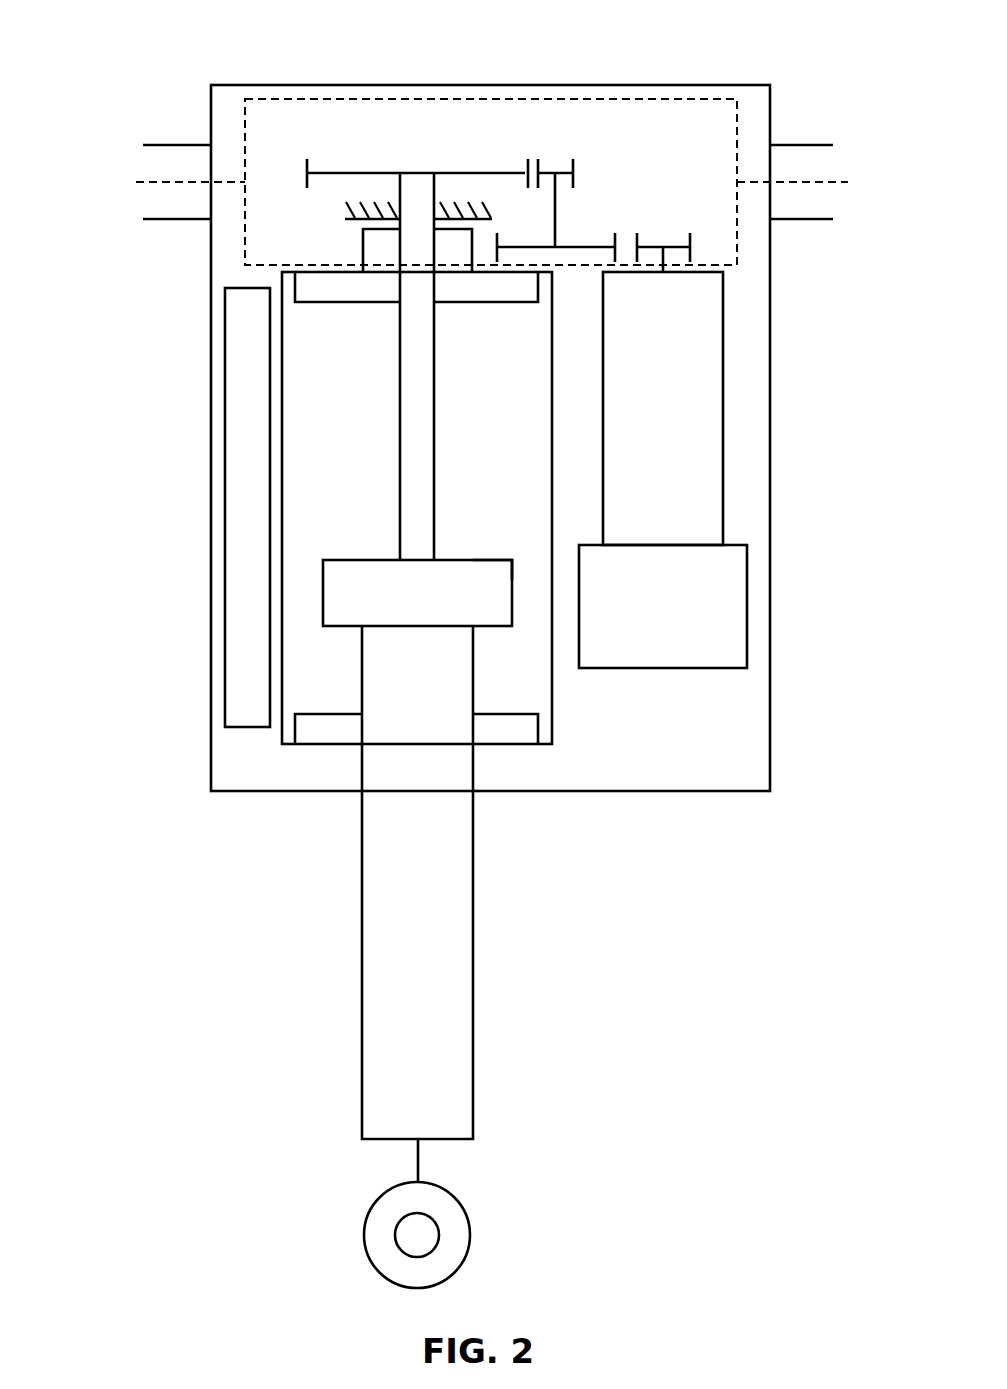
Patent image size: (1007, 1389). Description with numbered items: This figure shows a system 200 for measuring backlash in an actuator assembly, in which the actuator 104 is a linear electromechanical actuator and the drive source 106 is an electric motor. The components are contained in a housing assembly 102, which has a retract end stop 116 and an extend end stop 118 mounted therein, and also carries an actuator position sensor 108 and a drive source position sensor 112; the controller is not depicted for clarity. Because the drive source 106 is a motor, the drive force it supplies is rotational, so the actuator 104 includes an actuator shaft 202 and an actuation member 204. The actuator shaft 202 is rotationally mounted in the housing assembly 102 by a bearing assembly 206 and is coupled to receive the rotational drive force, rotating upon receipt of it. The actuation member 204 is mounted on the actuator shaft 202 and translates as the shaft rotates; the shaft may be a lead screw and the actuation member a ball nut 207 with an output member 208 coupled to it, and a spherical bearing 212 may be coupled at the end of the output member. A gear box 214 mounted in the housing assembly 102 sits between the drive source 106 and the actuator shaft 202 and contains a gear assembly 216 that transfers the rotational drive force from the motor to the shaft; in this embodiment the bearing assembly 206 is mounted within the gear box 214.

The system 200 is at (133, 36).
The housing assembly 102 is at (288, 84).
The gear box 214 is at (350, 99).
The gear assembly 216 is at (592, 173).
The bearing assembly 206 is at (362, 250).
The actuator 104 is at (338, 412).
The retract end stop 116 is at (517, 288).
The extend end stop 118 is at (517, 729).
The actuator shaft 202 is at (417, 360).
The actuator position sensor 108 is at (247, 482).
The actuation member 204 is at (359, 550).
The ball nut 207 is at (473, 555).
The drive source 106 is at (663, 408).
The drive source position sensor 112 is at (663, 606).
The output member 208 is at (453, 899).
The spherical bearing 212 is at (417, 1235).